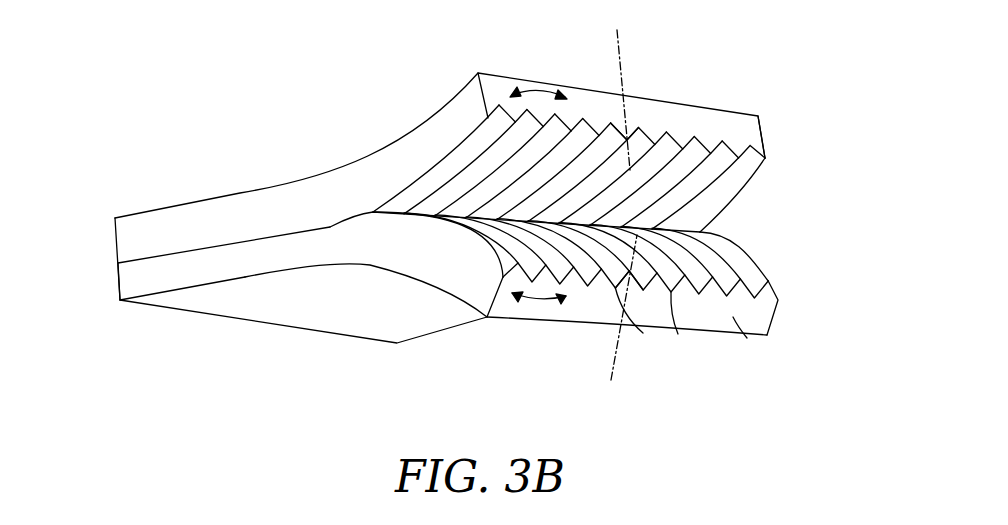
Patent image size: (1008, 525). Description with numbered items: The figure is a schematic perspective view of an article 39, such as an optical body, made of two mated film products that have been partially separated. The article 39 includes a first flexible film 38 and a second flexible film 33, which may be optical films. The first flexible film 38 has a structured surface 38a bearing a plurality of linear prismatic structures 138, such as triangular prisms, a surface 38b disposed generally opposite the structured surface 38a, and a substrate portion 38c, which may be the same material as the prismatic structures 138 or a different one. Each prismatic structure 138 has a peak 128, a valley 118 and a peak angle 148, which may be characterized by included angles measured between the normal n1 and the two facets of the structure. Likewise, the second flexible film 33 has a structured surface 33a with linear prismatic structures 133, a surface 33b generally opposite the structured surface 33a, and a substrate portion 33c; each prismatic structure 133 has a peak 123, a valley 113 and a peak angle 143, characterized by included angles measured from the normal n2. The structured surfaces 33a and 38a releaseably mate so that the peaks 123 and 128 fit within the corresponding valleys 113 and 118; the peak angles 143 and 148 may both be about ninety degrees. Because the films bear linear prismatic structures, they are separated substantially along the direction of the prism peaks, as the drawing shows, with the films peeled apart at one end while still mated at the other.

The article 39 is at (813, 124).
The second flexible film 33 is at (743, 123).
The structured surface 33a is at (764, 157).
The surface 33b is at (209, 198).
The substrate portion 33c is at (133, 237).
The first flexible film 38 is at (740, 330).
The structured surface 38a is at (773, 283).
The surface 38b is at (229, 305).
The substrate portion 38c is at (135, 281).
The valley 113 is at (752, 157).
The valley 118 is at (752, 262).
The peak 123 is at (722, 205).
The peak 128 is at (715, 250).
The linear prismatic structures 133 is at (700, 128).
The linear prismatic structures 138 is at (668, 328).
The peak angle 143 is at (539, 90).
The peak angle 148 is at (540, 302).
The normal n1 is at (613, 324).
The normal n2 is at (616, 87).